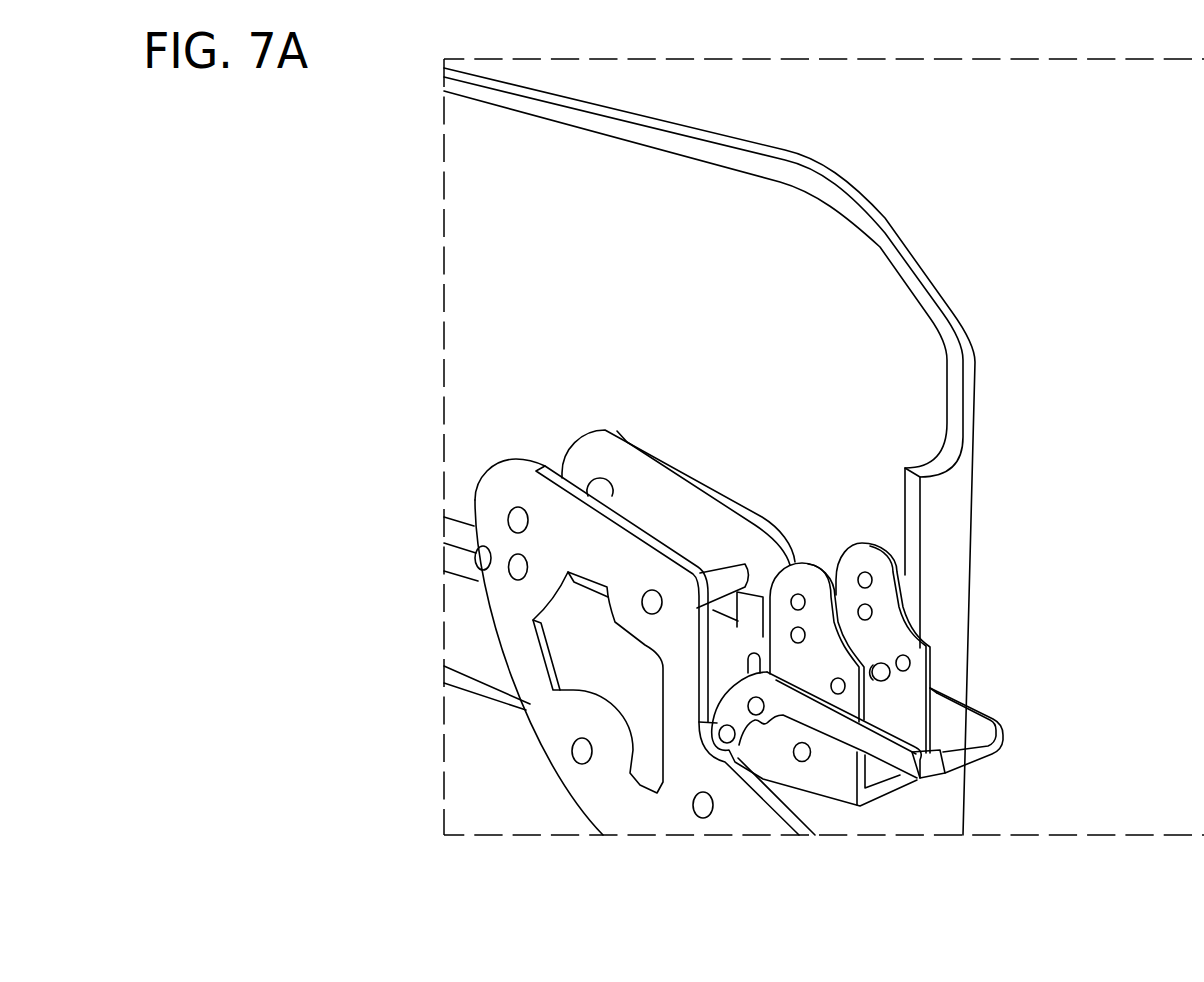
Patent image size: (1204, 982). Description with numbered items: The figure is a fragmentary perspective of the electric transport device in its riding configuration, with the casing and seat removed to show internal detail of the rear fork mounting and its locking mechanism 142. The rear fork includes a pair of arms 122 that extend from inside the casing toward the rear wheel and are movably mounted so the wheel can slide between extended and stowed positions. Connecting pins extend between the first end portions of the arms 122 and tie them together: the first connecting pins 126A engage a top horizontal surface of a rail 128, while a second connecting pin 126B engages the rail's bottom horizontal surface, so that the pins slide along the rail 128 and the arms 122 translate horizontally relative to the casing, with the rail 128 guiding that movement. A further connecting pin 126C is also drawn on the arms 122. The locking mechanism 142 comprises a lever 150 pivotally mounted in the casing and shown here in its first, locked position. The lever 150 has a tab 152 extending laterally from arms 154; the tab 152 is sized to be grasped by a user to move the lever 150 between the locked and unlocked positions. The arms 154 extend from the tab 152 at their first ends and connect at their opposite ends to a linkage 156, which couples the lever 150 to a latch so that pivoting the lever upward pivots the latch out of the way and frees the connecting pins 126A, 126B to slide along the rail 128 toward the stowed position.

The arms 122 is at (577, 646).
The first connecting pins 126A is at (514, 558).
The second connecting pin 126B is at (580, 752).
The bracket aperture 126C is at (703, 805).
The rail 128 is at (463, 628).
The locking mechanism 142 is at (958, 632).
The lever 150 is at (921, 671).
The tab 152 is at (972, 760).
The arms 154 is at (848, 733).
The linkage 156 is at (772, 651).